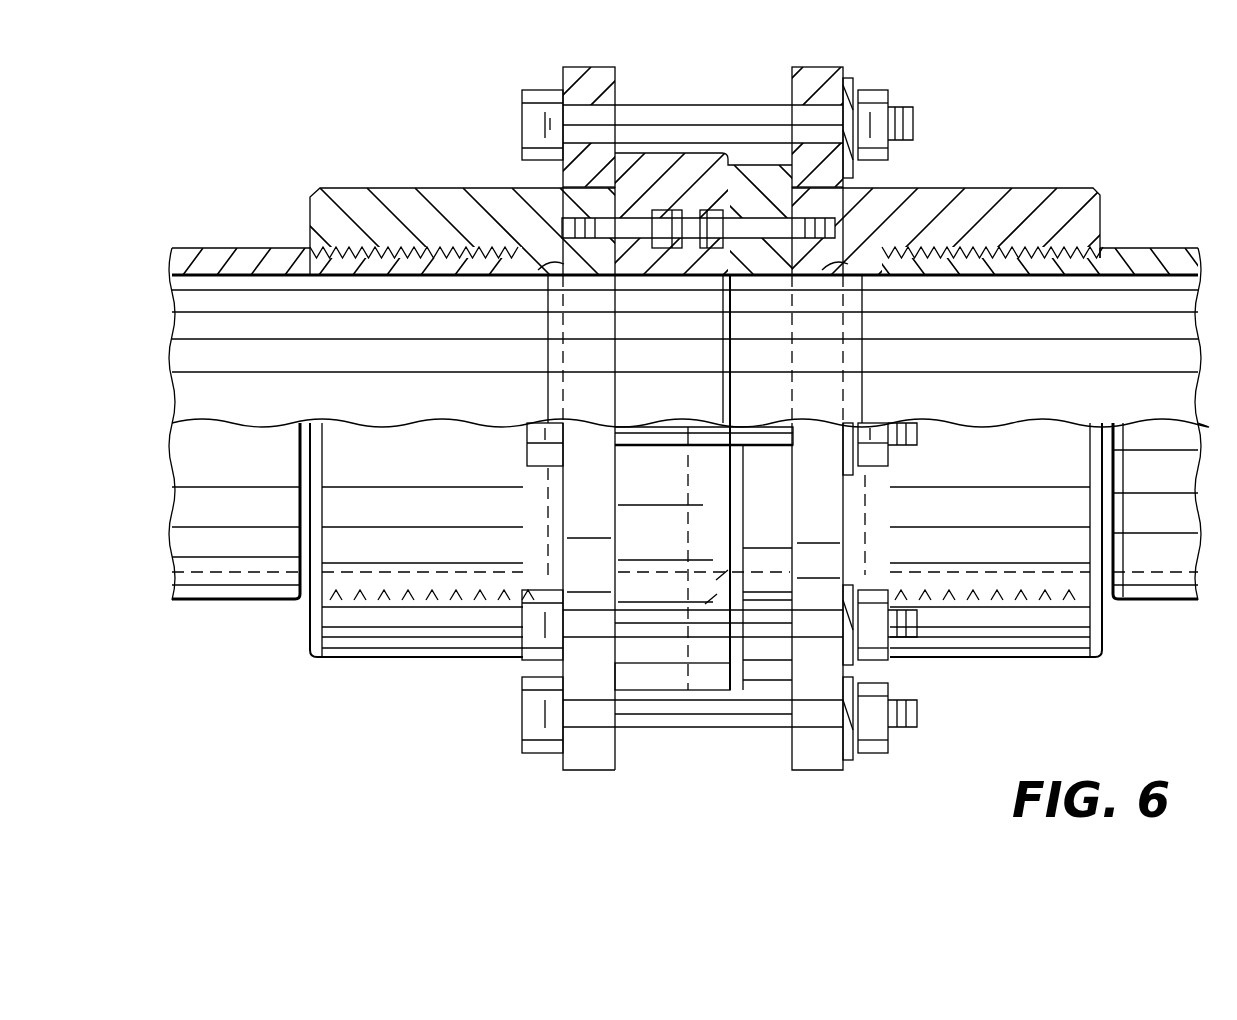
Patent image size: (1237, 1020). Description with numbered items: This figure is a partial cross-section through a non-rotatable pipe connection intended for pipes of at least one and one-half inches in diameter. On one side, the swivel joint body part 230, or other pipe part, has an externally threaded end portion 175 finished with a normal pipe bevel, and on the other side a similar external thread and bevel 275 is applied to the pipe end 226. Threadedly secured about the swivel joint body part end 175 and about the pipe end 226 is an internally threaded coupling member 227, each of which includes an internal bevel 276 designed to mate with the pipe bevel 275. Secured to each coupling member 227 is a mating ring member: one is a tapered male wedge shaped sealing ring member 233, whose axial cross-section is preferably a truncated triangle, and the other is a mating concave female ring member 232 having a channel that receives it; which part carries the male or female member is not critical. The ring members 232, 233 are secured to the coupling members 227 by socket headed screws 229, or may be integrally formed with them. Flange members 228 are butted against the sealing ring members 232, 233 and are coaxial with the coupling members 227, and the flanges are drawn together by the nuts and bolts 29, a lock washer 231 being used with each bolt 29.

The nuts and bolts 29 is at (722, 72).
The externally threaded end portion 175 is at (1037, 277).
The pipe end 226 is at (236, 248).
The coupling member 227 is at (384, 188).
The flange members 228 is at (585, 68).
The socket headed screws 229 is at (838, 232).
The swivel joint body part 230 is at (1172, 248).
The lock washer 231 is at (852, 84).
The female ring member 232 is at (668, 279).
The male sealing ring member 233 is at (747, 277).
The external thread and bevel 275 is at (504, 262).
The internal bevel 276 is at (560, 272).